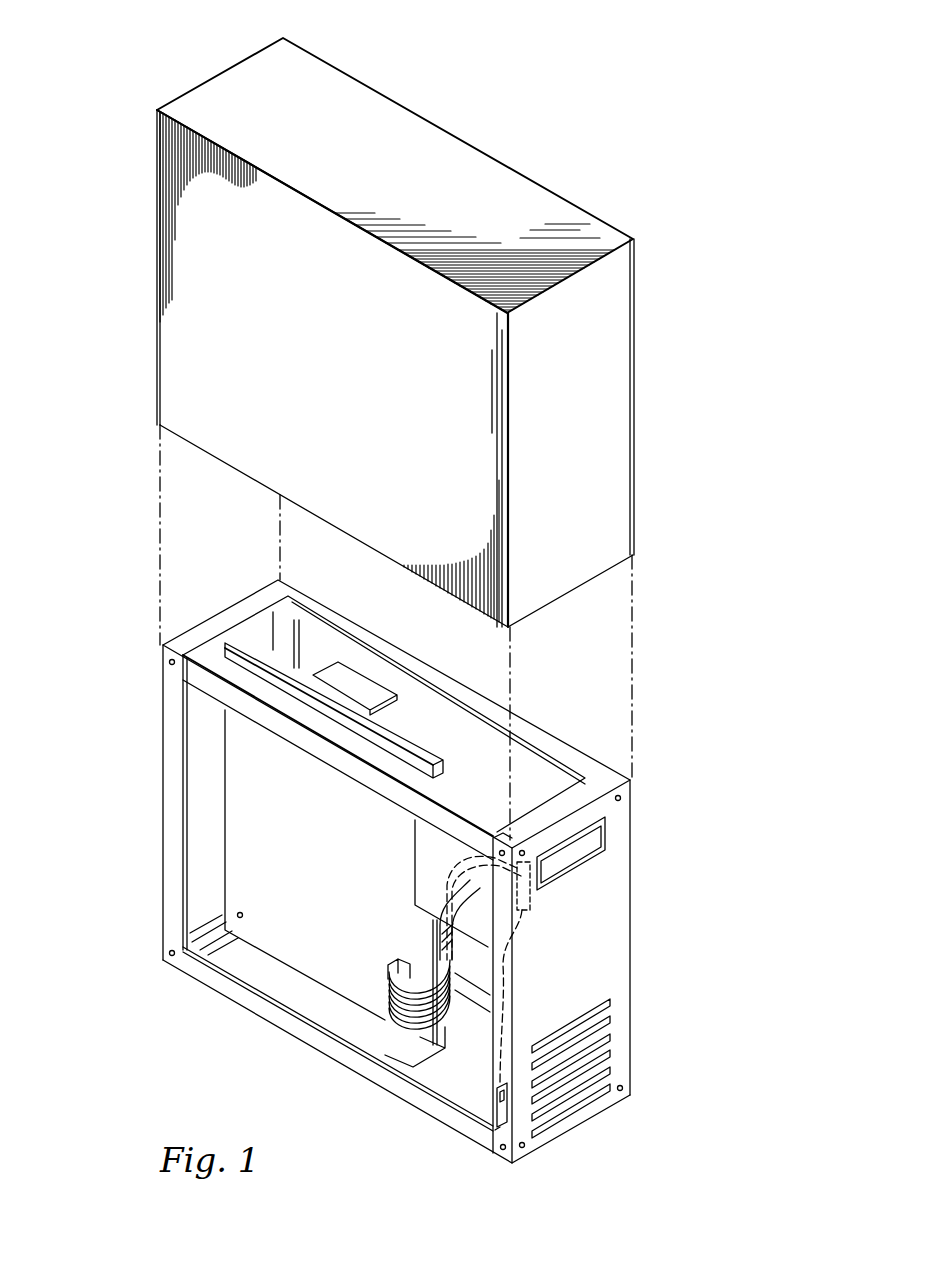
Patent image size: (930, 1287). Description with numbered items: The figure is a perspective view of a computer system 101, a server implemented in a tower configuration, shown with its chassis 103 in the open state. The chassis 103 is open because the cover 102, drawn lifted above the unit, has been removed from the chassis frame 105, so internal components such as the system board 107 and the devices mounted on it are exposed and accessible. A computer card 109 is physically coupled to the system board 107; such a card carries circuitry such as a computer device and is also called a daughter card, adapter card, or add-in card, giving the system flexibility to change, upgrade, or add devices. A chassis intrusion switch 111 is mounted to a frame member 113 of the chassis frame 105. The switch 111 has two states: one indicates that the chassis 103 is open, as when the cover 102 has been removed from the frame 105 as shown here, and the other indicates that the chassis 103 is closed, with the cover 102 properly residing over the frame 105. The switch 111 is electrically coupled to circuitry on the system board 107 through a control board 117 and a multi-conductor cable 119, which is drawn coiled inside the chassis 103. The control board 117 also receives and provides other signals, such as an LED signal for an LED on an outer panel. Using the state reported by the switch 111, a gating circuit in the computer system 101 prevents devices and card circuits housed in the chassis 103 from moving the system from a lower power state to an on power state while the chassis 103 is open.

The computer system 101 is at (553, 83).
The cover 102 is at (232, 76).
The chassis 103 is at (123, 871).
The chassis frame 105 is at (322, 752).
The system board 107 is at (270, 945).
The computer card 109 is at (360, 680).
The chassis intrusion switch 111 is at (497, 1103).
The frame member 113 is at (495, 1130).
The control board 117 is at (530, 900).
The multi-conductor cable 119 is at (390, 1005).